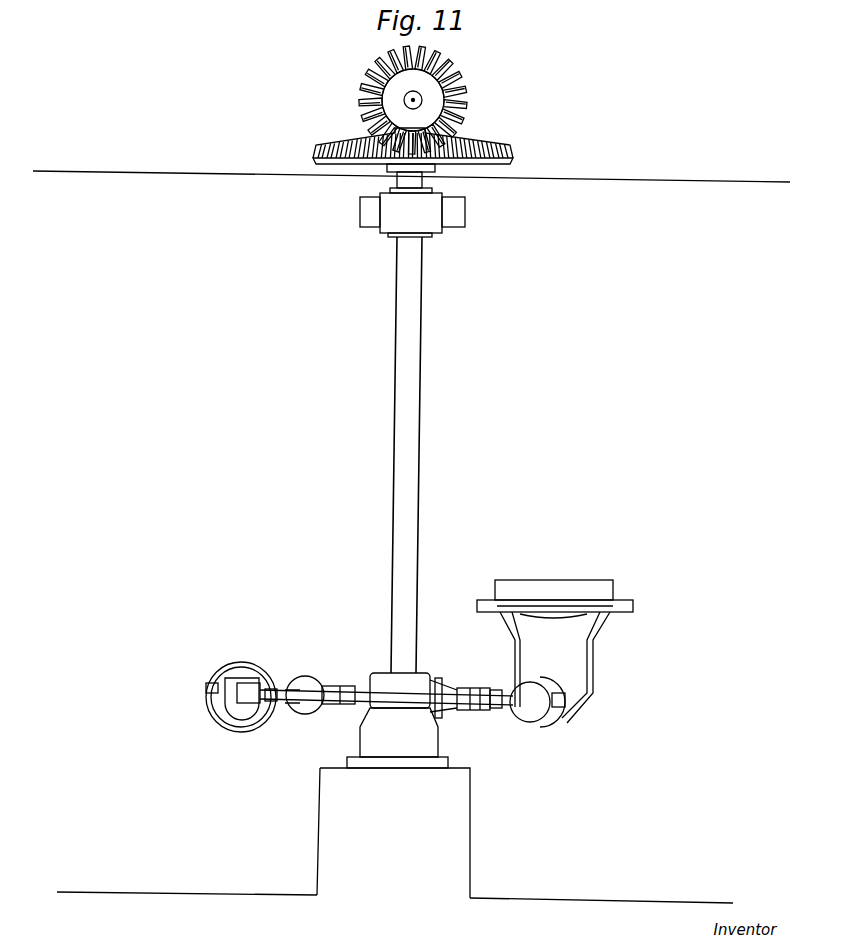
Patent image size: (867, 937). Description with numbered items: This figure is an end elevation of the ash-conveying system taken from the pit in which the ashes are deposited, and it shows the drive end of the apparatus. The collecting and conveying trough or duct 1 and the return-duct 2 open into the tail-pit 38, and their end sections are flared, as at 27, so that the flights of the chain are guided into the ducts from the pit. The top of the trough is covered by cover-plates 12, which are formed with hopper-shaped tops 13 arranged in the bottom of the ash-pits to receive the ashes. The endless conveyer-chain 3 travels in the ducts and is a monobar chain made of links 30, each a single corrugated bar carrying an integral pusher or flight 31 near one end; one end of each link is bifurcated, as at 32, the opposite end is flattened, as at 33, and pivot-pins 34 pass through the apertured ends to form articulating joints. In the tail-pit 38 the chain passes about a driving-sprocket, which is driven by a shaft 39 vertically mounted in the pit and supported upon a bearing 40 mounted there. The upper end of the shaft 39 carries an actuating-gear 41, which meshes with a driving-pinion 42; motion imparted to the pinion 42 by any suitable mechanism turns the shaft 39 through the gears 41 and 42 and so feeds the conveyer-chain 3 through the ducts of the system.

The collecting and conveying trough or duct 1 is at (494, 663).
The return-duct 2 is at (242, 662).
The conveyer-chain 3 is at (301, 678).
The cover-plate 12 is at (543, 591).
The hopper-shaped top 13 is at (540, 582).
The flared end section 27 is at (245, 720).
The link 30 is at (282, 722).
The pusher or flight 31 is at (228, 700).
The bifurcated end 32 is at (340, 686).
The flattened end 33 is at (250, 683).
The pivot-pin 34 is at (320, 686).
The tail-pit 38 is at (395, 699).
The shaft 39 is at (418, 415).
The bearing 40 is at (400, 733).
The actuating-gear 41 is at (500, 147).
The driving-pinion 42 is at (467, 98).